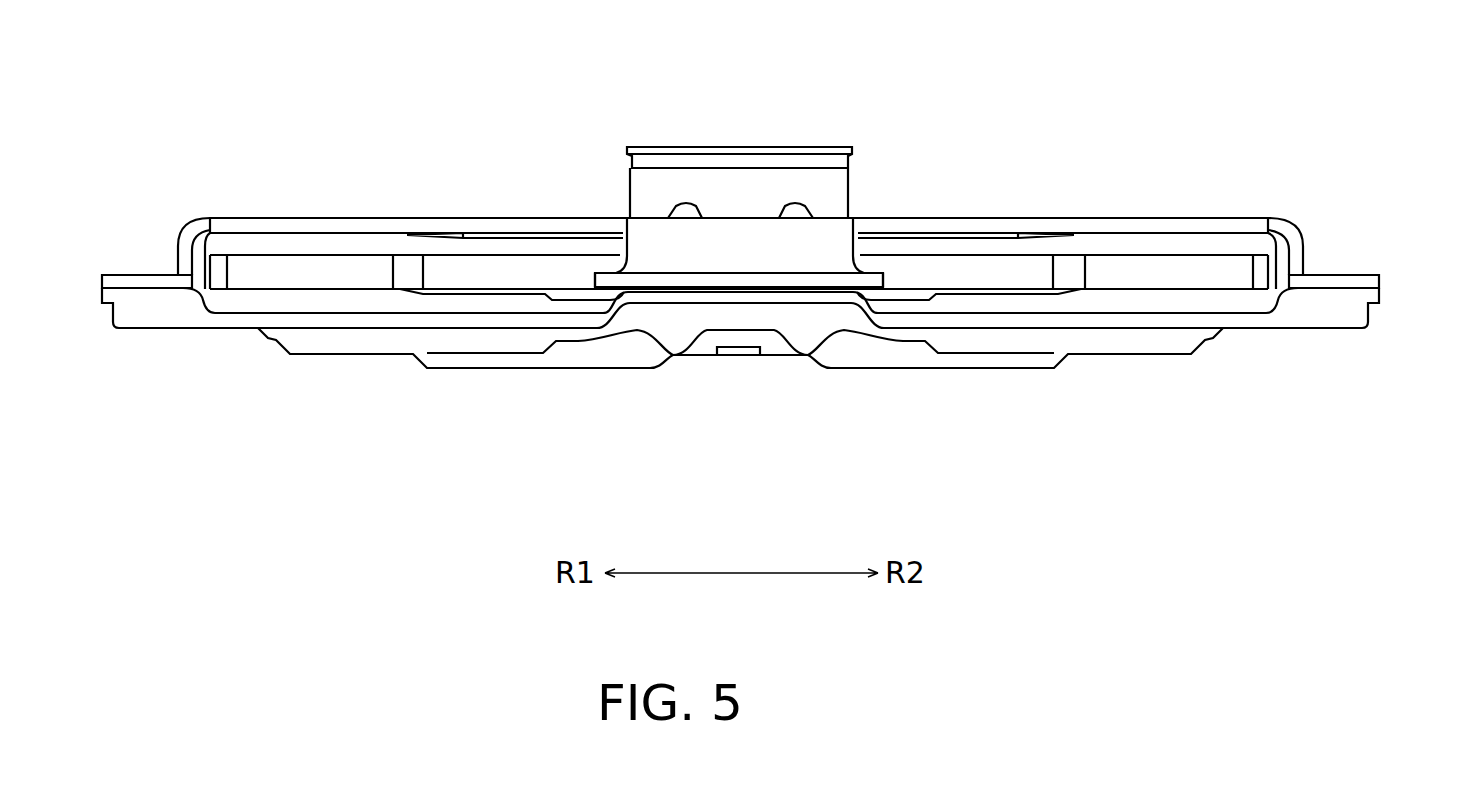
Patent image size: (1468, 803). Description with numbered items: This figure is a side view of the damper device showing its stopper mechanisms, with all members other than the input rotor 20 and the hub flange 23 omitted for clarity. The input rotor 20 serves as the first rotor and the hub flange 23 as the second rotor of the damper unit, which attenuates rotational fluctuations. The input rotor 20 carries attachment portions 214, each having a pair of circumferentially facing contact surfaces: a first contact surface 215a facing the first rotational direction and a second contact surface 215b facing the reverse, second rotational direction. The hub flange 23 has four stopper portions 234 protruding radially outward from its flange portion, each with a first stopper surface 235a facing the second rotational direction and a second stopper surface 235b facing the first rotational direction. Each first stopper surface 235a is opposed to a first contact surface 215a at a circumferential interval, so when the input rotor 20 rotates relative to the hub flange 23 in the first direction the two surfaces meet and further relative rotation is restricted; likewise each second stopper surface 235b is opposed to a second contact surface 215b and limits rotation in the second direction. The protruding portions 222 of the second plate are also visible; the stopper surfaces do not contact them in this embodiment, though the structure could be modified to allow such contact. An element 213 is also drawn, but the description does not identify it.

The input rotor 20 is at (1391, 254).
The hub flange 23 is at (1270, 247).
The cover plate 213 is at (176, 245).
The attachment portion 214 is at (116, 273).
The first contact surface 215a is at (595, 287).
The second contact surface 215b is at (885, 278).
The protruding portion 222 is at (133, 303).
The stopper portion 234 is at (312, 270).
The first stopper surface 235a is at (410, 266).
The second stopper surface 235b is at (1070, 267).